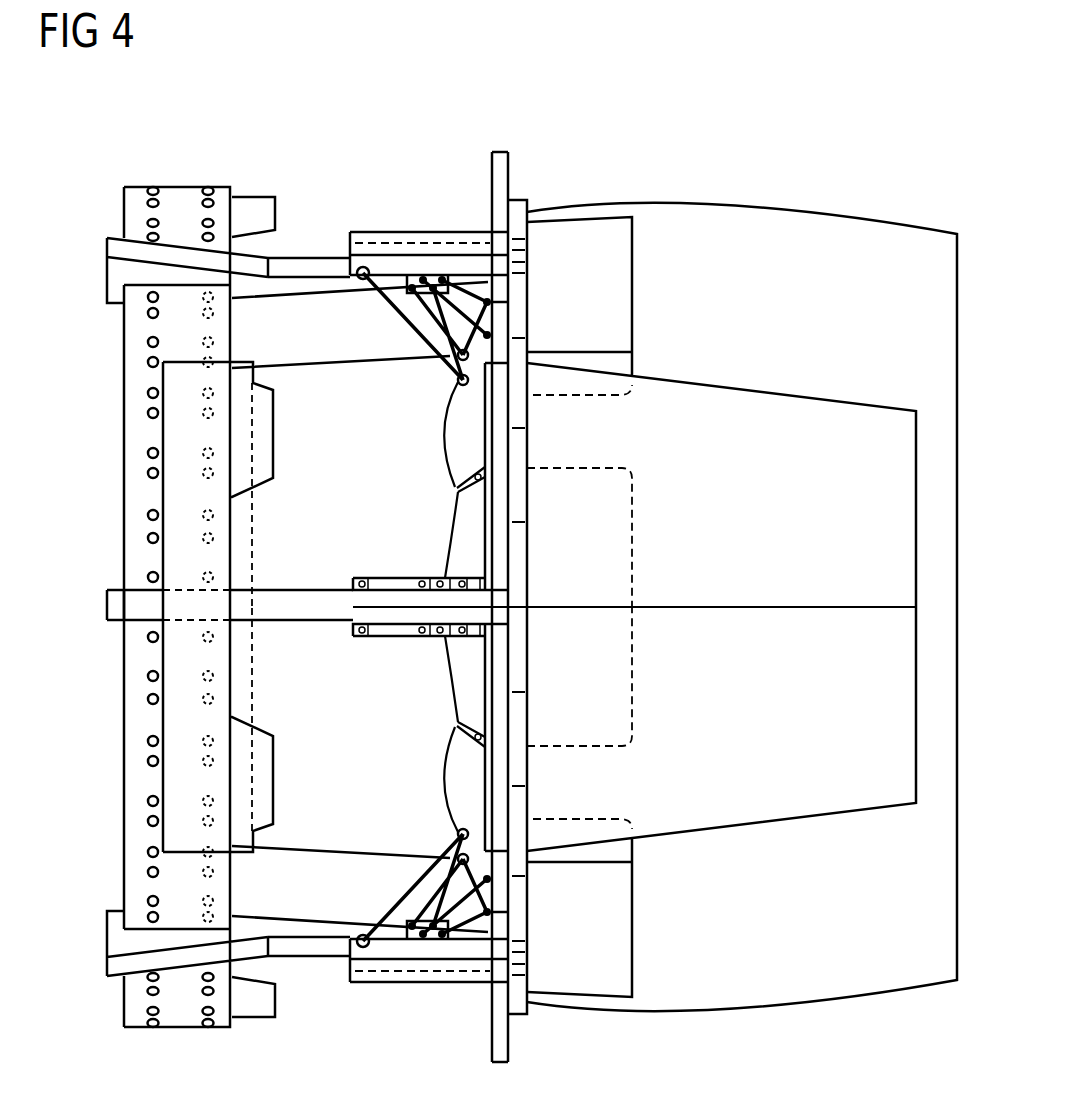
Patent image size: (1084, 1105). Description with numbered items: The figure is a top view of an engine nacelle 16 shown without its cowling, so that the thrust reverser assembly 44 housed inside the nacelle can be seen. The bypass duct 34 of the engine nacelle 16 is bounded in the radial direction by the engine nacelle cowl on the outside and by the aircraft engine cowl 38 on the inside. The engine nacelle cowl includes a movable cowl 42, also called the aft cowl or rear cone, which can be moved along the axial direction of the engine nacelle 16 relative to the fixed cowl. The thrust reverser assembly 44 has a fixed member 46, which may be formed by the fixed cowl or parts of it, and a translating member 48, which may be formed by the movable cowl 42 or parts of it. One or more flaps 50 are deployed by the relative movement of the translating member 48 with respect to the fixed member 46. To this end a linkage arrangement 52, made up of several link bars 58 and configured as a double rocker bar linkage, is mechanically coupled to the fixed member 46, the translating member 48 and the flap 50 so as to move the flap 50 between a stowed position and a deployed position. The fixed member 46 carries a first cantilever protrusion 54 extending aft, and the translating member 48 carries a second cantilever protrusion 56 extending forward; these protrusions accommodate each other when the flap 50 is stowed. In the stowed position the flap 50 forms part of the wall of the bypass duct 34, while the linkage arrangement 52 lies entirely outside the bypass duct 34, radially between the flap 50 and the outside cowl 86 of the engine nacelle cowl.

The engine nacelle 16 is at (250, 123).
The bypass duct 34 is at (318, 927).
The aircraft engine cowl 38 is at (318, 382).
The movable cowl 42 is at (806, 225).
The thrust reverser assembly 44 is at (395, 215).
The fixed member 46 is at (138, 323).
The translating member 48 is at (497, 160).
The flap 50 is at (457, 547).
The linkage arrangement 52 is at (407, 417).
The first cantilever protrusion 54 is at (318, 268).
The second cantilever protrusion 56 is at (437, 262).
The link bars 58 is at (448, 327).
The outside cowl 86 is at (610, 818).